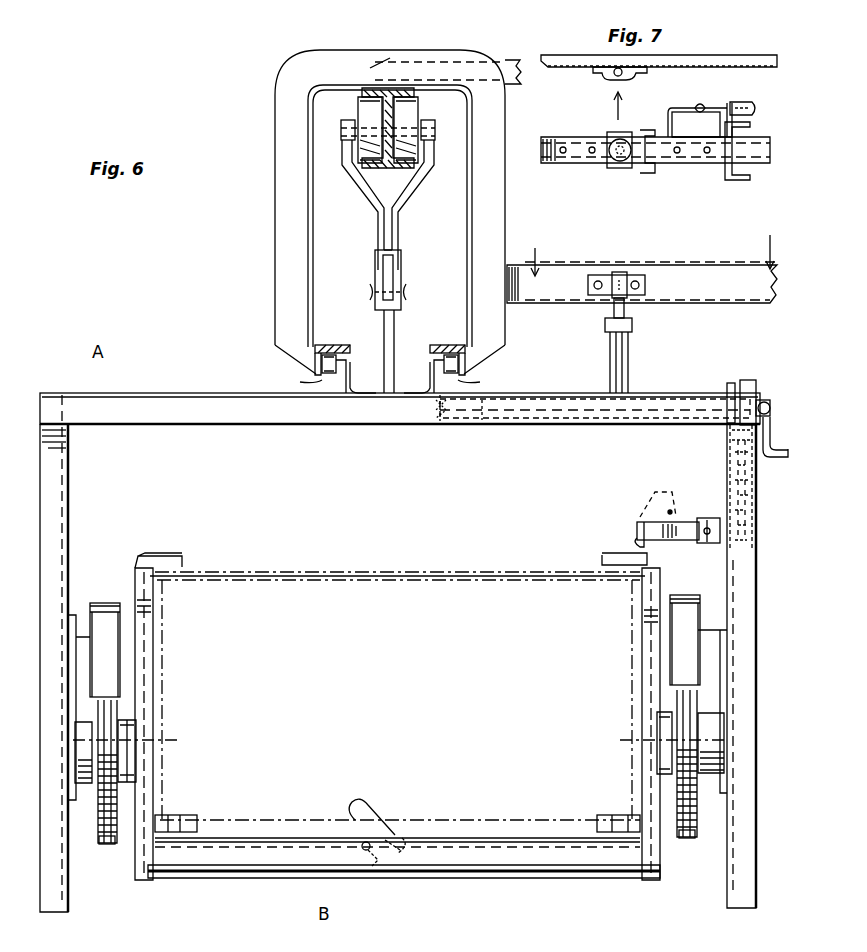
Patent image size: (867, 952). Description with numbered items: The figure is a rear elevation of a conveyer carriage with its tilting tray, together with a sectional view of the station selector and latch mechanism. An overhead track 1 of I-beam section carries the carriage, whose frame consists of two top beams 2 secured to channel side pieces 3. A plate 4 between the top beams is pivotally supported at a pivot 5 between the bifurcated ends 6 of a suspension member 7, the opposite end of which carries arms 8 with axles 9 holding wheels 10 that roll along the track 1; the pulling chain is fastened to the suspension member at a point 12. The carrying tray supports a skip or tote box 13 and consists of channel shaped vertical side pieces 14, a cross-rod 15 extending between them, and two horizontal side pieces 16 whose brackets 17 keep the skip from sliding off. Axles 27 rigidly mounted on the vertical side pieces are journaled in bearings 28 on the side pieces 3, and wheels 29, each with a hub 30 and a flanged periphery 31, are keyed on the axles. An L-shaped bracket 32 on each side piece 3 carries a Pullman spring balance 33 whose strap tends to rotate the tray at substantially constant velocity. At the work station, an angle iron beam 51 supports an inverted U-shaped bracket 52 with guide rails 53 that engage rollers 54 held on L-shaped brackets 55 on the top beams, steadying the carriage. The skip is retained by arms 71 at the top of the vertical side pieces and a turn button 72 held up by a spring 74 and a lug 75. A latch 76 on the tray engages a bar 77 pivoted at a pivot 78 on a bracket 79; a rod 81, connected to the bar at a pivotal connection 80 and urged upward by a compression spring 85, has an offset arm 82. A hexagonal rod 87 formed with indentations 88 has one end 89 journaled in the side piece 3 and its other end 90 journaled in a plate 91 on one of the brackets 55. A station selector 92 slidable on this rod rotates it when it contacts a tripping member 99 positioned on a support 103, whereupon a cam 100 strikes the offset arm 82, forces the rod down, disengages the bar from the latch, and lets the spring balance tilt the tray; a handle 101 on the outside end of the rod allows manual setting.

In FIG. 6, the overhead track 1 is at (390, 92).
In FIG. 6, the top beams 2 is at (175, 398).
In FIG. 6, the channel side pieces 3 is at (55, 488).
In FIG. 6, the plate 4 is at (395, 342).
In FIG. 6, the pivot 5 is at (406, 292).
In FIG. 6, the bifurcated ends 6 is at (376, 268).
In FIG. 6, the suspension member 7 is at (379, 238).
In FIG. 6, the arms 8 is at (370, 200).
In FIG. 6, the axles 9 is at (342, 136).
In FIG. 6, the wheels 10 is at (362, 108).
In FIG. 6, the chain fastening point 12 is at (400, 240).
In FIG. 6, the skip or tote box 13 is at (415, 582).
In FIG. 6, the vertical side pieces 14 is at (150, 775).
In FIG. 6, the cross-rod 15 is at (565, 880).
In FIG. 6, the horizontal side pieces 16 is at (165, 822).
In FIG. 6, the brackets 17 is at (190, 822).
In FIG. 6, the axles 27 is at (150, 745).
In FIG. 6, the bearings 28 is at (82, 748).
In FIG. 6, the wheels 29 is at (100, 810).
In FIG. 6, the hub 30 is at (133, 735).
In FIG. 6, the crown or flanged periphery 31 is at (108, 846).
In FIG. 6, the L-shaped bracket 32 is at (75, 670).
In FIG. 6, the Pullman spring balance 33 is at (103, 610).
In FIG. 6, the angle iron beam 51 is at (505, 62).
In FIG. 6, the inverted U-shaped bracket 52 is at (495, 143).
In FIG. 6, the guide rails 53 is at (330, 350).
In FIG. 6, the rollers 54 is at (305, 372).
In FIG. 6, the L-shaped brackets 55 is at (358, 388).
In FIG. 6, the arms 71 is at (166, 558).
In FIG. 6, the turn button 72 is at (375, 830).
In FIG. 6, the spring 74 is at (372, 870).
In FIG. 6, the lug 75 is at (362, 843).
In FIG. 6, the latch 76 is at (636, 538).
In FIG. 6, the bar 77 is at (650, 492).
In FIG. 7, the bar 77 is at (668, 115).
In FIG. 6, the pivot 78 is at (705, 544).
In FIG. 7, the pivot 78 is at (700, 105).
In FIG. 6, the bracket 79 is at (706, 518).
In FIG. 7, the bracket 79 is at (718, 118).
In FIG. 6, the pivotal connection 80 is at (752, 532).
In FIG. 6, the rod 81 is at (752, 492).
In FIG. 6, the offset arm 82 is at (748, 388).
In FIG. 7, the offset arm 82 is at (748, 102).
In FIG. 6, the compression spring 85 is at (752, 473).
In FIG. 6, the hexagonal rod 87 is at (483, 422).
In FIG. 7, the hexagonal rod 87 is at (668, 165).
In FIG. 6, the indentations 88 is at (584, 393).
In FIG. 7, the indentations 88 is at (707, 155).
In FIG. 6, the end 89 is at (730, 390).
In FIG. 6, the end 90 is at (448, 422).
In FIG. 6, the plate 91 is at (438, 424).
In FIG. 6, the station selector 92 is at (621, 370).
In FIG. 7, the station selector 92 is at (620, 172).
In FIG. 6, the tripping member 99 is at (612, 308).
In FIG. 7, the tripping member 99 is at (617, 82).
In FIG. 6, the cam 100 is at (768, 400).
In FIG. 6, the handle 101 is at (780, 450).
In FIG. 6, the support 103 is at (702, 272).
In FIG. 7, the support 103 is at (752, 55).